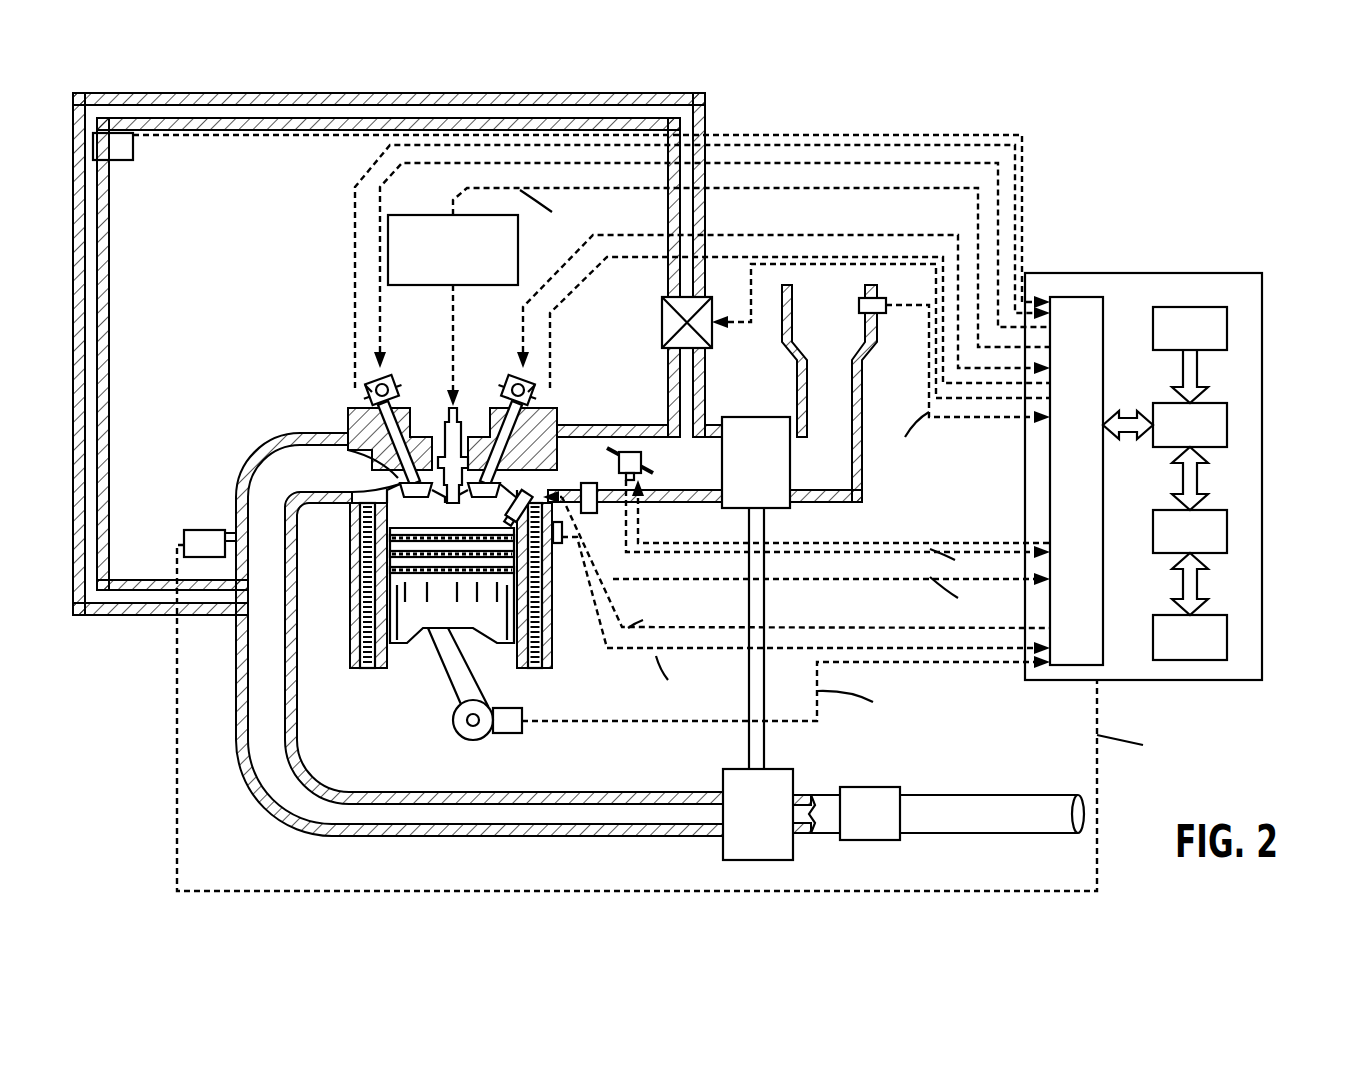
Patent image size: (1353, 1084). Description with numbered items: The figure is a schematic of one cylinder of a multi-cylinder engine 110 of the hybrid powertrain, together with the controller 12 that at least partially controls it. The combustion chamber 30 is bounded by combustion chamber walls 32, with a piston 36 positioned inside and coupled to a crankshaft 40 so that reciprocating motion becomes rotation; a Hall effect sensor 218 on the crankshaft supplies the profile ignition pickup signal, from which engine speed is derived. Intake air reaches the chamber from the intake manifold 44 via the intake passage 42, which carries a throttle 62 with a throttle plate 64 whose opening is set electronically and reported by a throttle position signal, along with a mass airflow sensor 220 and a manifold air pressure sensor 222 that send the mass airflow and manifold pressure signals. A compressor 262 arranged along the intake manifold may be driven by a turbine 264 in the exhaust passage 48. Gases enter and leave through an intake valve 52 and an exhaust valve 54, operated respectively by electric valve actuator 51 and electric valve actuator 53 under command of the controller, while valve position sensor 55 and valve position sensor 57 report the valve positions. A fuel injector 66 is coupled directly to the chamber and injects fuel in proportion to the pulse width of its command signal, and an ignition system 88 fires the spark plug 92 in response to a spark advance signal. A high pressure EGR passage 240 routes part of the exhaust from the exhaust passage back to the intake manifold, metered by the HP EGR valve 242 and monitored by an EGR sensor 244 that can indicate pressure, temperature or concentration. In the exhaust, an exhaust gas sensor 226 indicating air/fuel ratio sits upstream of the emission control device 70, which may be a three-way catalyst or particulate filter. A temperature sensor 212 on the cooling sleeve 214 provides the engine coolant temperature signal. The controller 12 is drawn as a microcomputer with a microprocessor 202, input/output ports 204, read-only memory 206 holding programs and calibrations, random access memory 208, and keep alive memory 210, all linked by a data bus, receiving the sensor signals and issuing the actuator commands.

The controller 12 is at (1189, 463).
The combustion chamber 30 is at (378, 600).
The combustion chamber walls 32 is at (378, 655).
The piston 36 is at (433, 615).
The crankshaft 40 is at (462, 740).
The intake passage 42 is at (842, 336).
The intake manifold 44 is at (702, 476).
The exhaust passage 48 is at (329, 486).
The electric valve actuator 51 is at (505, 378).
The intake valve 52 is at (488, 480).
The electric valve actuator 53 is at (395, 378).
The exhaust valve 54 is at (395, 474).
The valve position sensor 55 is at (538, 397).
The valve position sensor 57 is at (365, 388).
The throttle 62 is at (630, 451).
The throttle plate 64 is at (612, 447).
The fuel injector 66 is at (526, 494).
The emission control device 70 is at (882, 826).
The ignition system 88 is at (430, 215).
The spark plug 92 is at (448, 428).
The engine 110 is at (276, 348).
The microprocessor 202 is at (1227, 428).
The input/output ports 204 is at (1103, 305).
The read-only memory 206 is at (1227, 325).
The random access memory 208 is at (1227, 528).
The keep alive memory 210 is at (1227, 635).
The temperature sensor 212 is at (535, 618).
The cooling sleeve 214 is at (558, 546).
The Hall effect sensor 218 is at (510, 735).
The mass airflow sensor 220 is at (884, 313).
The manifold air pressure sensor 222 is at (592, 514).
The exhaust gas sensor 226 is at (184, 535).
The high pressure EGR passage 240 is at (515, 93).
The HP EGR valve 242 is at (662, 323).
The EGR sensor 244 is at (118, 162).
The compressor 262 is at (741, 416).
The turbine 264 is at (723, 846).